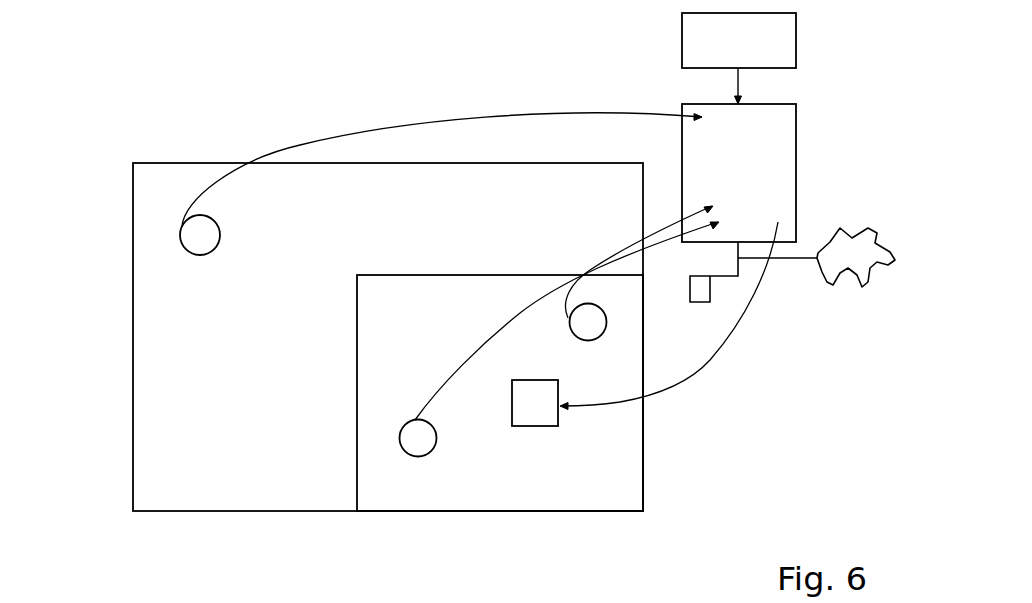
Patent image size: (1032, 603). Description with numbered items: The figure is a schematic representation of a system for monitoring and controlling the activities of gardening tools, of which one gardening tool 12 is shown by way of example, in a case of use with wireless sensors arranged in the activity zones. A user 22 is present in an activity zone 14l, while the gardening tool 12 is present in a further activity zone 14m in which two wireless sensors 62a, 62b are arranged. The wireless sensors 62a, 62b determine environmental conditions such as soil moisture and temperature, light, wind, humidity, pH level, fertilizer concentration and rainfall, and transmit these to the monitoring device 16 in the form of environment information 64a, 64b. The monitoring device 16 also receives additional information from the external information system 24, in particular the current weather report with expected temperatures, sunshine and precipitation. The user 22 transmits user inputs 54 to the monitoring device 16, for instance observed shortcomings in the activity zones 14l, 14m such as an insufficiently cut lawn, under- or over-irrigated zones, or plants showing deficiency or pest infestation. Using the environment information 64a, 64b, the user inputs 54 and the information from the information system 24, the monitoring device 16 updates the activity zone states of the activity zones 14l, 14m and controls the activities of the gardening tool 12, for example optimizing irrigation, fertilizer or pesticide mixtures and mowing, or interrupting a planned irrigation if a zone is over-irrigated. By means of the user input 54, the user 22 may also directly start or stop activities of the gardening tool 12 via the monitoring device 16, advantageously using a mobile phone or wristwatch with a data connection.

The gardening tool 12 is at (535, 427).
The activity zone 14l is at (133, 410).
The activity zone 14m is at (357, 415).
The monitoring device 16 is at (787, 168).
The user 22 is at (180, 233).
The external information system 24 is at (787, 40).
The user input 54 is at (334, 133).
The wireless sensor 62a is at (410, 458).
The wireless sensor 62b is at (607, 323).
The environment information 64a is at (468, 352).
The environment information 64b is at (664, 222).